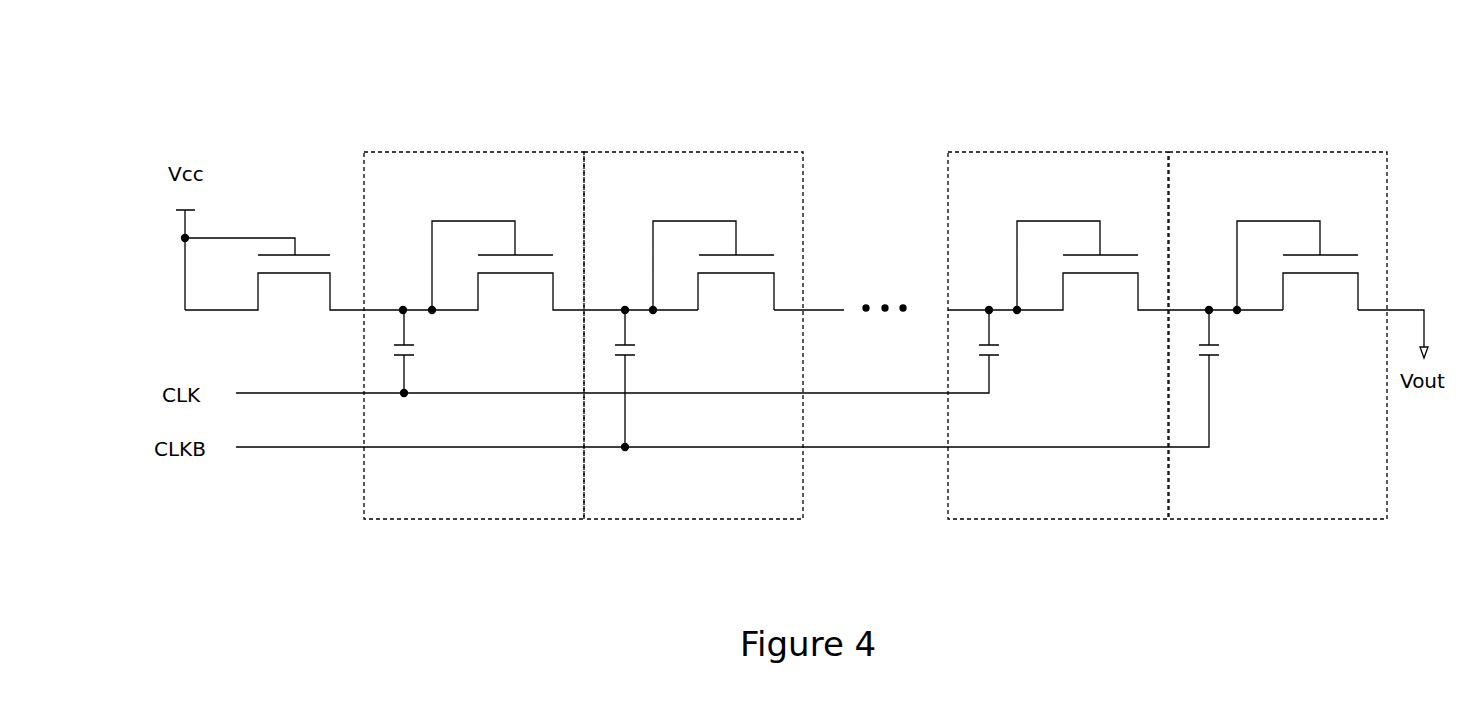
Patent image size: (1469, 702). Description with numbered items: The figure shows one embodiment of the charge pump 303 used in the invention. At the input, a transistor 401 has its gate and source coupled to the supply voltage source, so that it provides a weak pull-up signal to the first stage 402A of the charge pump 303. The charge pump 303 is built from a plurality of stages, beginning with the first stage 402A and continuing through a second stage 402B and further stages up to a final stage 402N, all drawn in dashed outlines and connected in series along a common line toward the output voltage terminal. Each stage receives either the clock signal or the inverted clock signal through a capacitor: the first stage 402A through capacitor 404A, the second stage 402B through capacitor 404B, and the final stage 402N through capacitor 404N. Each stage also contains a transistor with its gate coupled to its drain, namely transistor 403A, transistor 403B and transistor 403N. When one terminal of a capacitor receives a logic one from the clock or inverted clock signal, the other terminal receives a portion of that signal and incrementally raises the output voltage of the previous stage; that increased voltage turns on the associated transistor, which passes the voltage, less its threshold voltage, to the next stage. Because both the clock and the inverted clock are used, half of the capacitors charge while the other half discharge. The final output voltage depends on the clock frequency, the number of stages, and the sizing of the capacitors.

The charge pump 303 is at (882, 70).
The transistor 401 is at (294, 276).
The first stage 402A is at (531, 335).
The stage 402B is at (693, 335).
The last stage 402N is at (1006, 335).
The transistor 403A is at (549, 267).
The transistor 403B is at (698, 267).
The transistor 403N is at (1282, 267).
The capacitor 404A is at (437, 353).
The capacitor 404B is at (658, 380).
The capacitor 404N is at (955, 378).